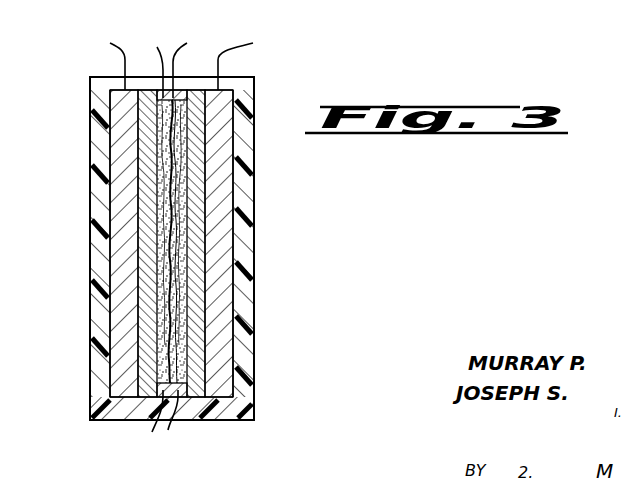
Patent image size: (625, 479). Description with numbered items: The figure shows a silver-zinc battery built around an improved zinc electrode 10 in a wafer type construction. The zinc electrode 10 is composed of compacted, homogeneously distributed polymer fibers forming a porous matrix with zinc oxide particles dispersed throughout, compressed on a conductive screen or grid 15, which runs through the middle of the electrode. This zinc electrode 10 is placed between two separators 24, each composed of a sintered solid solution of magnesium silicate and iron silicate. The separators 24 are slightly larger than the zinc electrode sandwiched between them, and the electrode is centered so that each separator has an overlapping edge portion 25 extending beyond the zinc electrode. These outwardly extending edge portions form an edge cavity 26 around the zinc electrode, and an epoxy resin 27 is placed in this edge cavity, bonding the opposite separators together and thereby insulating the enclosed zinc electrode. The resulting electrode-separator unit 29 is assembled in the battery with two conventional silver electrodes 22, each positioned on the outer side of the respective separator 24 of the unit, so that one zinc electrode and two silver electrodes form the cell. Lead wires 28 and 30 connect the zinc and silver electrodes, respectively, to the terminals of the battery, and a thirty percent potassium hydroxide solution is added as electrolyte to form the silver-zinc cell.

The zinc electrode 10 is at (187, 260).
The conductive screen or grid 15 is at (170, 305).
The silver electrode 22 is at (215, 305).
The separator 24 is at (147, 168).
The overlapping edge portion 25 is at (160, 93).
The edge cavity 26 is at (168, 430).
The epoxy resin 27 is at (140, 458).
The lead wire 28 is at (190, 59).
The electrode-separator unit 29 is at (205, 181).
The lead wire 30 is at (186, 56).